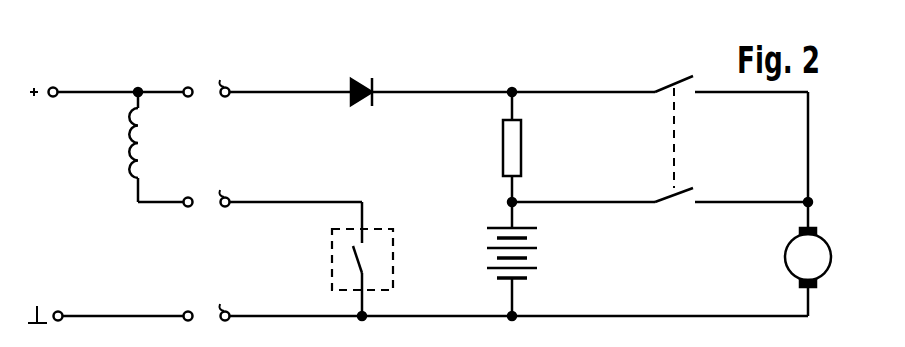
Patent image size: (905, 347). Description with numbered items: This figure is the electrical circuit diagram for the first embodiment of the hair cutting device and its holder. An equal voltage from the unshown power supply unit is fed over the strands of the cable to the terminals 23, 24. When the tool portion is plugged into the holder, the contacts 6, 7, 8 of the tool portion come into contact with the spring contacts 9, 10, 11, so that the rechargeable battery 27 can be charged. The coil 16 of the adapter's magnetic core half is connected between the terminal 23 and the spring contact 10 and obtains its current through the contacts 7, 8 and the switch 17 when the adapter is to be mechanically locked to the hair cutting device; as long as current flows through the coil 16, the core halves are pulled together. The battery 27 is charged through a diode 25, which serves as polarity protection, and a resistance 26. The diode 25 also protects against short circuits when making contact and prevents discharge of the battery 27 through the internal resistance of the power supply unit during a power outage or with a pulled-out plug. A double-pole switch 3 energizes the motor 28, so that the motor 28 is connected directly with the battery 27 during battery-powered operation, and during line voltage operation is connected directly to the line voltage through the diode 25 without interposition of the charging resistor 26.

The terminal 23 is at (53, 79).
The terminal 24 is at (60, 302).
The spring contact 9 is at (187, 79).
The spring contact 10 is at (188, 189).
The spring contact 11 is at (188, 302).
The contact 6 is at (225, 79).
The contact 7 is at (228, 189).
The contact 8 is at (226, 302).
The electrical coil 16 is at (129, 137).
The diode 25 is at (368, 78).
The switch 17 is at (360, 256).
The resistance 26 is at (517, 141).
The battery 27 is at (532, 244).
The double-pole switch 3 is at (676, 150).
The motor 28 is at (822, 250).